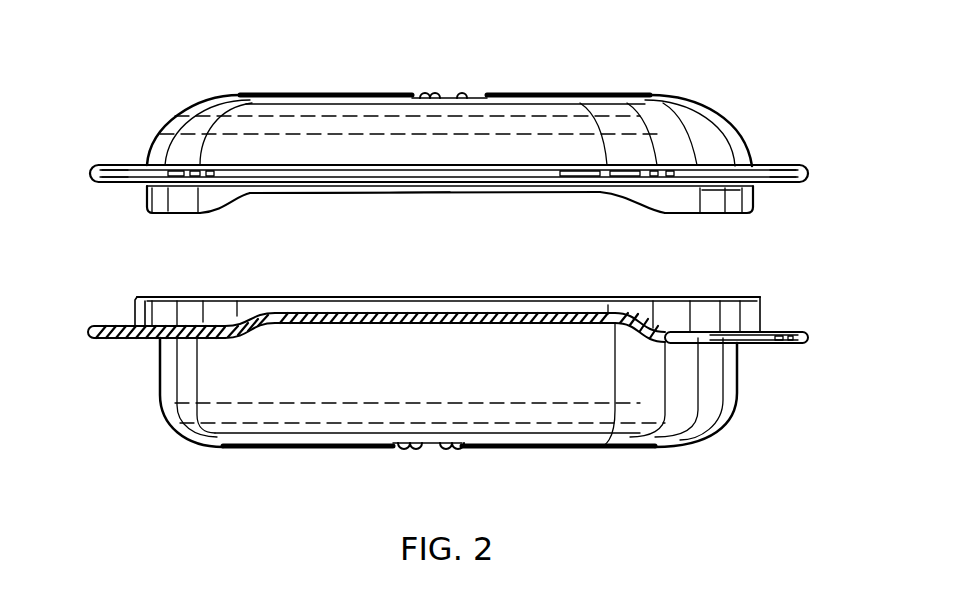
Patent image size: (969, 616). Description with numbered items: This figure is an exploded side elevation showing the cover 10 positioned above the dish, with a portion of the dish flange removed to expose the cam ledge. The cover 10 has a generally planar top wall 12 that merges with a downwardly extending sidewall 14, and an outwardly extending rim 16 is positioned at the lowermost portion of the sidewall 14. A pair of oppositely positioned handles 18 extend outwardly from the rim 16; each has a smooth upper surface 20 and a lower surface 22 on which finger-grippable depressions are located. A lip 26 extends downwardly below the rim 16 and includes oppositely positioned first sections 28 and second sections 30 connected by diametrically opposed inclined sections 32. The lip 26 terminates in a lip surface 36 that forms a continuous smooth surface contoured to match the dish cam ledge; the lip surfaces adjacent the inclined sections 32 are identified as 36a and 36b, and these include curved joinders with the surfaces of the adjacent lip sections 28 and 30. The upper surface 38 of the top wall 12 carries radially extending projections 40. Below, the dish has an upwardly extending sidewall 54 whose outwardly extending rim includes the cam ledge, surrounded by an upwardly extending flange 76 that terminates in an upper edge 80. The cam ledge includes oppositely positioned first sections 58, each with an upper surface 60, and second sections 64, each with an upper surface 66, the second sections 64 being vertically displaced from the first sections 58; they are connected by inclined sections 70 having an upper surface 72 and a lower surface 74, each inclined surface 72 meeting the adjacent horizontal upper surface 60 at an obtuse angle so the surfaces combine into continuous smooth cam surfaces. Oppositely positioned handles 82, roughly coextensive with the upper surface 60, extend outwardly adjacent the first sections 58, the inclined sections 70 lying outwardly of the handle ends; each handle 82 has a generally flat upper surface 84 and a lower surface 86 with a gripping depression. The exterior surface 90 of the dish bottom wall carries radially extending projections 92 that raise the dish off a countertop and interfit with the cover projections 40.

The cover 10 is at (700, 98).
The top wall 12 is at (242, 95).
The sidewall 14 is at (163, 133).
The rim 16 is at (395, 175).
The handles 18 is at (807, 173).
The upper surface 20 is at (113, 163).
The lower surface 22 is at (97, 183).
The lip 26 is at (762, 206).
The first sections 28 is at (178, 200).
The second sections 30 is at (437, 190).
The inclined sections 32 is at (241, 195).
The lip surface 36 is at (304, 197).
The lip surface 36a is at (232, 208).
The lip surface 36b is at (663, 204).
The upper surface 38 is at (447, 95).
The projections 40 is at (463, 98).
The sidewall 54 is at (703, 387).
The first sections 58 is at (153, 343).
The upper surface 60 is at (160, 332).
The second sections 64 is at (317, 327).
The upper surface 66 is at (320, 317).
The inclined sections 70 is at (243, 341).
The upper surface 72 is at (240, 327).
The lower surface 74 is at (647, 336).
The flange 76 is at (708, 320).
The upper edge 80 is at (502, 300).
The handles 82 is at (808, 336).
The upper surface 84 is at (780, 331).
The lower surface 86 is at (797, 344).
The exterior surface 90 is at (430, 446).
The projections 92 is at (447, 446).